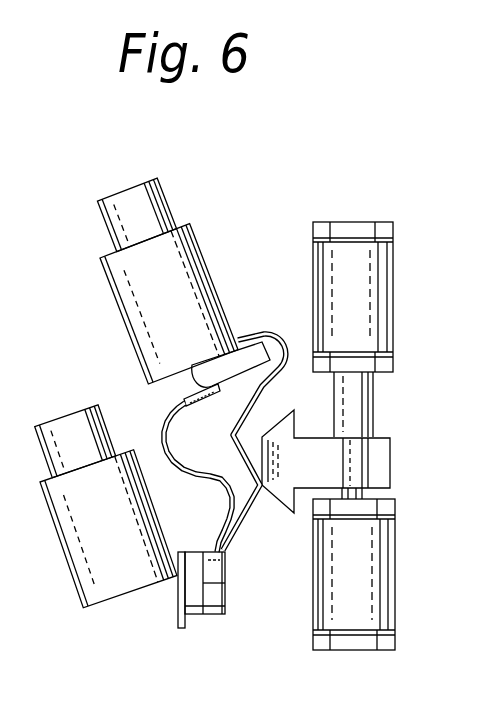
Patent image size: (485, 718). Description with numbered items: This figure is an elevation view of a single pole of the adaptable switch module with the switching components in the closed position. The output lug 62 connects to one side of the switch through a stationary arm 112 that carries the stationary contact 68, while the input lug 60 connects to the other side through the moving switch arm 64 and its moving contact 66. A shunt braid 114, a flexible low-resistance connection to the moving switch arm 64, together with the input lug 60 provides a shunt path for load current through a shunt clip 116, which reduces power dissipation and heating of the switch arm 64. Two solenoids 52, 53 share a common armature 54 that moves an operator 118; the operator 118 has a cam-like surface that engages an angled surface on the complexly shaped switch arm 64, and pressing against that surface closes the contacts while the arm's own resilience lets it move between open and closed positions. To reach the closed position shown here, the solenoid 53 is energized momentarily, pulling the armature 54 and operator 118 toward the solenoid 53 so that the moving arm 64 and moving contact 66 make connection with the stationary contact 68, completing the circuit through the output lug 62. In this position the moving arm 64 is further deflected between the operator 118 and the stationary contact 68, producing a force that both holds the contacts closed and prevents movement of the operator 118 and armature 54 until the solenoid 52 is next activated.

The solenoid 52 is at (372, 283).
The solenoid 53 is at (373, 591).
The common armature 54 is at (362, 407).
The input lug 60 is at (173, 268).
The output lug 62 is at (100, 543).
The moving switch arm 64 is at (270, 327).
The moving contact 66 is at (210, 603).
The stationary contact 68 is at (196, 623).
The stationary arm 112 is at (180, 607).
The shunt braid 114 is at (160, 422).
The shunt clip 116 is at (193, 362).
The operator 118 is at (373, 466).